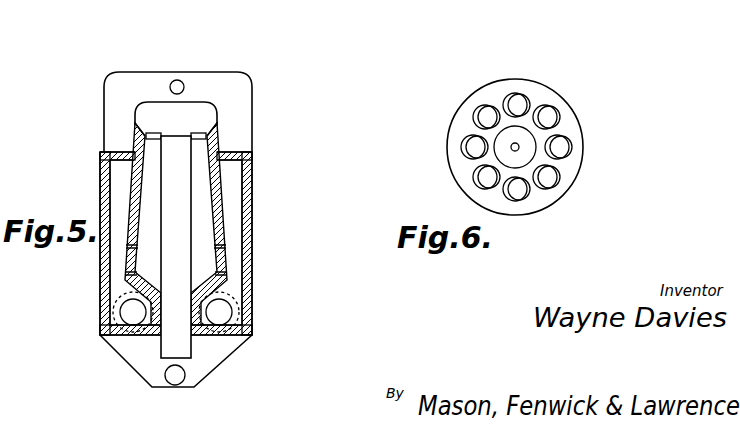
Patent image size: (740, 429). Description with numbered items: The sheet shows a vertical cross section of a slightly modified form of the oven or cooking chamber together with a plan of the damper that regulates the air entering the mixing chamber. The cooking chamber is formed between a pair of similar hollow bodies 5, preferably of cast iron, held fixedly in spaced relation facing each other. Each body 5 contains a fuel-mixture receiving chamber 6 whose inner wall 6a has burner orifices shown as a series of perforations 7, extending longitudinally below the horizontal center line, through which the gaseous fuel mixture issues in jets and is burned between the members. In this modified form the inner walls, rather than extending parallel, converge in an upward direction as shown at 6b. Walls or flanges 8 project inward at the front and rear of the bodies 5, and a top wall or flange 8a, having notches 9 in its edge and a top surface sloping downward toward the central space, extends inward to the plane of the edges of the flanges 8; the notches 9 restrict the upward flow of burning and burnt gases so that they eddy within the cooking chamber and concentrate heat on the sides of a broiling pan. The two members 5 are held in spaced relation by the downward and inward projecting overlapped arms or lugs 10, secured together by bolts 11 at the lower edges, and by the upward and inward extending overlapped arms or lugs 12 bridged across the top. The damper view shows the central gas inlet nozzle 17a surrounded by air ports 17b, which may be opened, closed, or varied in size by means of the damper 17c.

In FIG. 5, the hollow body 5 is at (252, 192).
In FIG. 5, the fuel-mixture receiving chamber 6 is at (176, 196).
In FIG. 5, the inner wall 6a is at (157, 163).
In FIG. 5, the converging walls 6b is at (213, 203).
In FIG. 5, the perforations 7 is at (130, 247).
In FIG. 5, the walls or flanges 8 is at (150, 222).
In FIG. 5, the top wall or flange 8a is at (213, 113).
In FIG. 5, the notches 9 is at (157, 133).
In FIG. 5, the arms or lugs 10 is at (223, 350).
In FIG. 5, the bolts 11 is at (185, 380).
In FIG. 5, the arms or lugs 12 is at (203, 82).
In FIG. 6, the gas inlet nozzle 17a is at (518, 145).
In FIG. 6, the air ports 17b is at (520, 100).
In FIG. 6, the damper 17c is at (568, 170).